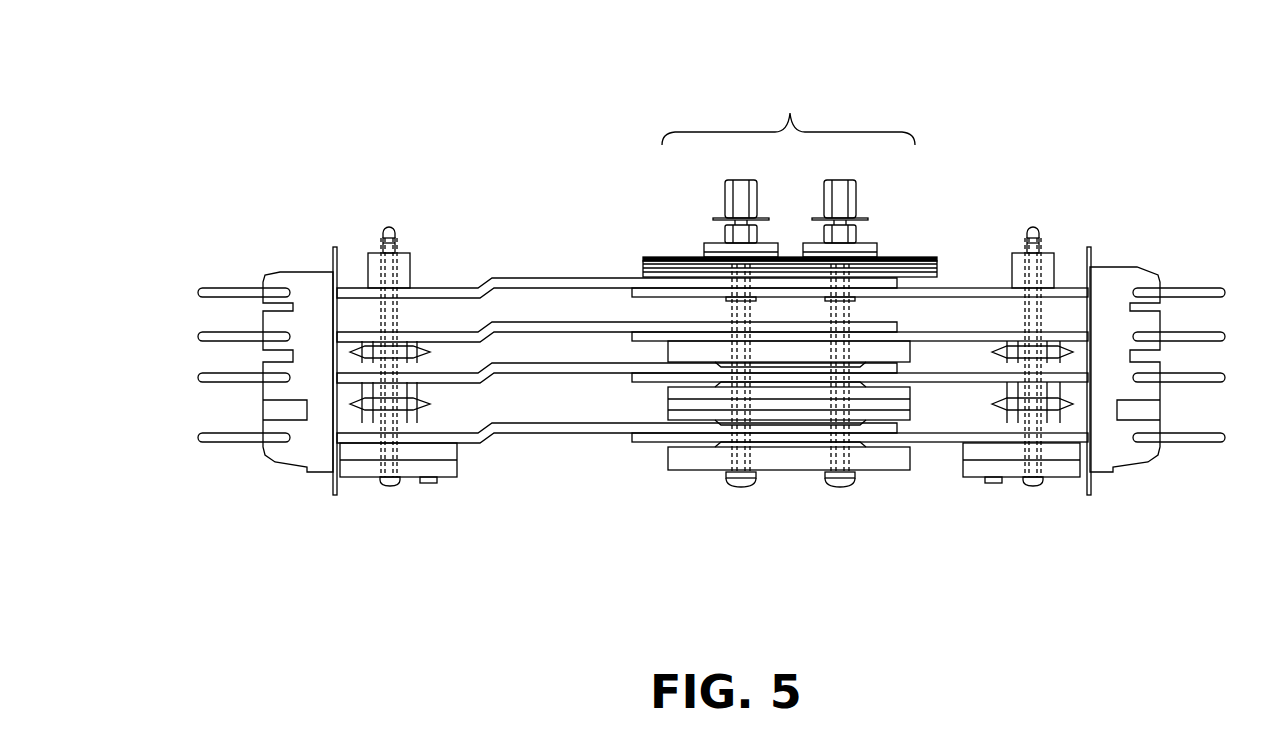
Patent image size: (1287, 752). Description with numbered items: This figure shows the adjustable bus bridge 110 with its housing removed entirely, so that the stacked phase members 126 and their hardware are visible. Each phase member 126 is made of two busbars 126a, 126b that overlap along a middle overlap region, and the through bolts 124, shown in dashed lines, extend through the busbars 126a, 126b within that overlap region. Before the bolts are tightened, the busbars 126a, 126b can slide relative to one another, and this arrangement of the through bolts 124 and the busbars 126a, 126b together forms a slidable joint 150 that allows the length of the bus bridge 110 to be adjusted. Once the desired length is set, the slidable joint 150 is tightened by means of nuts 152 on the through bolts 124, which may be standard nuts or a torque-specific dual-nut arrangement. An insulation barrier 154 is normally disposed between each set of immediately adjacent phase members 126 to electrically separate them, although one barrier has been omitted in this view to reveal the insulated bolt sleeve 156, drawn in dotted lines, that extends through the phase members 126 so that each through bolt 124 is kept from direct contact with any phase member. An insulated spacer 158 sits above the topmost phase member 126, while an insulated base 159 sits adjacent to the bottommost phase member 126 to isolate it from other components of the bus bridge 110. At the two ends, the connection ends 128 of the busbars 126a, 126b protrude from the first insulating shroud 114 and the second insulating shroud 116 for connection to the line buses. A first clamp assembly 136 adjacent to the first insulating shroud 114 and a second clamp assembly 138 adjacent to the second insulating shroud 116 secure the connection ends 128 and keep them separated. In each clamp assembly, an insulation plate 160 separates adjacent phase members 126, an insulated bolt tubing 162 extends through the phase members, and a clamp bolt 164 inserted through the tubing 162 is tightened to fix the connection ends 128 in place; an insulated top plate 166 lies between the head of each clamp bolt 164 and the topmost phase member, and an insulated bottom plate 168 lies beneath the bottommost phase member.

The adjustable bus bridge 110 is at (108, 128).
The first insulating shroud 114 is at (1112, 267).
The second insulating shroud 116 is at (312, 268).
The through bolt 124 is at (733, 452).
The phase member 126 is at (653, 447).
The busbar 126a is at (953, 445).
The busbar 126b is at (572, 433).
The connection end 128 is at (235, 287).
The first clamp assembly 136 is at (1060, 221).
The second clamp assembly 138 is at (418, 220).
The slidable joint 150 is at (790, 238).
The nut 152 is at (720, 216).
The insulation barrier 154 is at (668, 343).
The insulated bolt sleeve 156 is at (732, 316).
The insulated spacer 158 is at (722, 272).
The insulated base 159 is at (802, 470).
The insulation plate 160 is at (1003, 368).
The insulated bolt tubing 162 is at (1027, 324).
The clamp bolt 164 is at (389, 226).
The insulated top plate 166 is at (1012, 278).
The insulated bottom plate 168 is at (1050, 478).